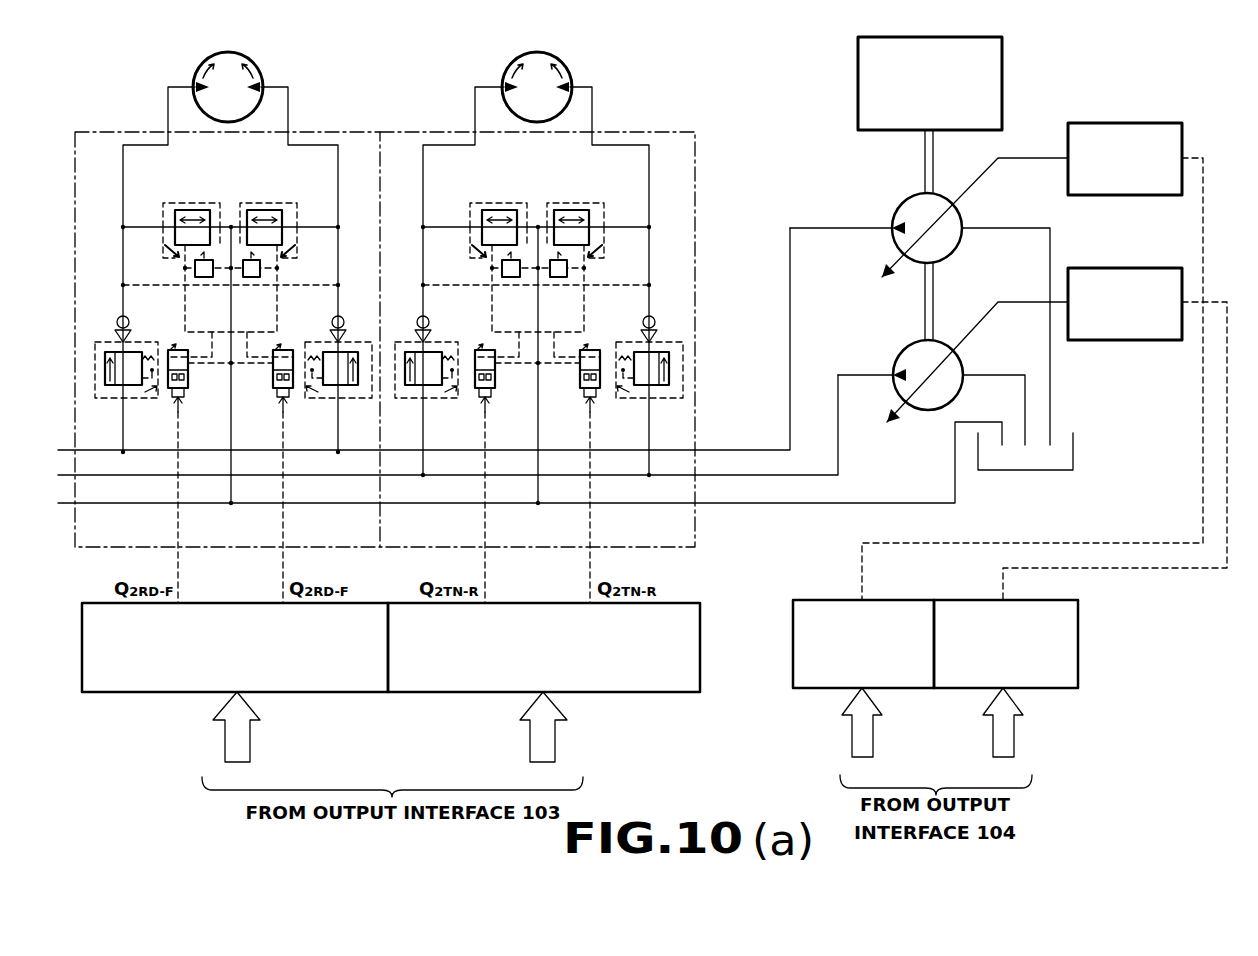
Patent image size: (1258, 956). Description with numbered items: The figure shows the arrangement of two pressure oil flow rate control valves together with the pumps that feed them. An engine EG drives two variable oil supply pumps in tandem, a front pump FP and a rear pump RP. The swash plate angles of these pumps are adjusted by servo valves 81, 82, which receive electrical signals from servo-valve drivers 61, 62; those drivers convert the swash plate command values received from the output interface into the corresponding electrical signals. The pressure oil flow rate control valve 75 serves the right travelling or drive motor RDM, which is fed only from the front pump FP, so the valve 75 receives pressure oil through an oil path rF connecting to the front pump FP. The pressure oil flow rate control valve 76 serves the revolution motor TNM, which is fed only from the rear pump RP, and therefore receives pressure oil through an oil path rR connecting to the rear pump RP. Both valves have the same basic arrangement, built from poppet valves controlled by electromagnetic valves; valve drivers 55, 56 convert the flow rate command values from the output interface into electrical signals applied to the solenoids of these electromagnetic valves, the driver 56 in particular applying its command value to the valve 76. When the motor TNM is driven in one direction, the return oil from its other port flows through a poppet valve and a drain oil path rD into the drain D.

The pressure oil flow rate control valve 75 is at (230, 312).
The pressure oil flow rate control valve 76 is at (538, 312).
The servo valve 81 is at (1140, 123).
The servo valve 82 is at (1140, 268).
The valve driver 55 is at (335, 692).
The valve driver 56 is at (650, 692).
The servo-valve driver 61 is at (820, 600).
The servo-valve driver 62 is at (1078, 625).
The right travelling motor RDM is at (240, 56).
The revolution motor TNM is at (549, 56).
The engine EG is at (1002, 68).
The front pump FP is at (900, 200).
The rear pump RP is at (900, 348).
The drain D is at (1073, 458).
The oil path rF is at (738, 450).
The oil path rR is at (812, 475).
The oil path rD is at (878, 503).